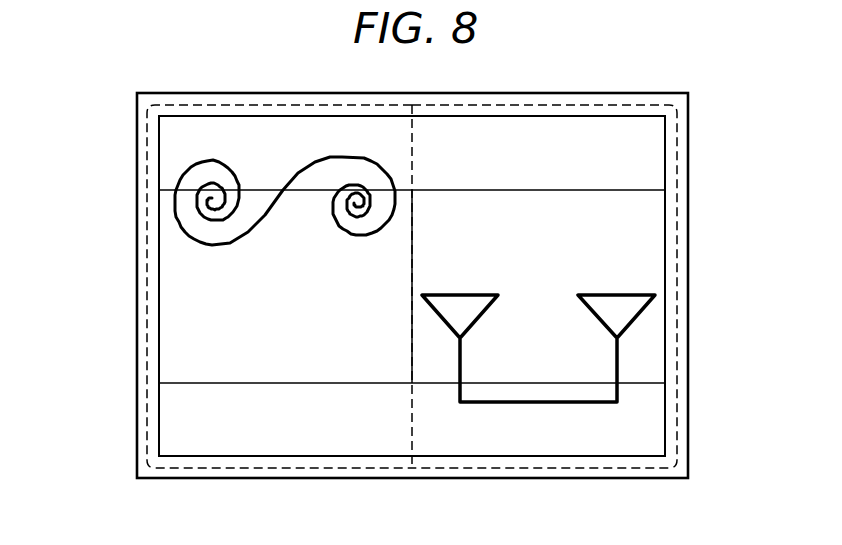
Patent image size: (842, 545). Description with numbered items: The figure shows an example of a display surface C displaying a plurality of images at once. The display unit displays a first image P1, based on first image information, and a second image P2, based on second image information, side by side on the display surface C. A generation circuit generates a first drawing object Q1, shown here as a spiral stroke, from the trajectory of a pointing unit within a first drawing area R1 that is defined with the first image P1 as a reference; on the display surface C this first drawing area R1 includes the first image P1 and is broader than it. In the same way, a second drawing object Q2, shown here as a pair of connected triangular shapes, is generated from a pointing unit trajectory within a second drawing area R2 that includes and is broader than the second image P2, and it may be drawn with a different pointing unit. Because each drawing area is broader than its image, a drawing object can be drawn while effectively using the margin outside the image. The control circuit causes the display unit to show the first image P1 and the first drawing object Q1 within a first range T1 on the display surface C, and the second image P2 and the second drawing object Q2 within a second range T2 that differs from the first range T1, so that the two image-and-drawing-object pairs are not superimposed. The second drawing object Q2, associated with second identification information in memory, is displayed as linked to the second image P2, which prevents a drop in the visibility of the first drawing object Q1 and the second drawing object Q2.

The display surface C is at (688, 113).
The first range T1 is at (147, 161).
The second range T2 is at (679, 162).
The first image P1 is at (170, 257).
The second image P2 is at (653, 253).
The first drawing area R1 is at (172, 435).
The second drawing area R2 is at (653, 440).
The first drawing object Q1 is at (362, 235).
The second drawing object Q2 is at (615, 295).